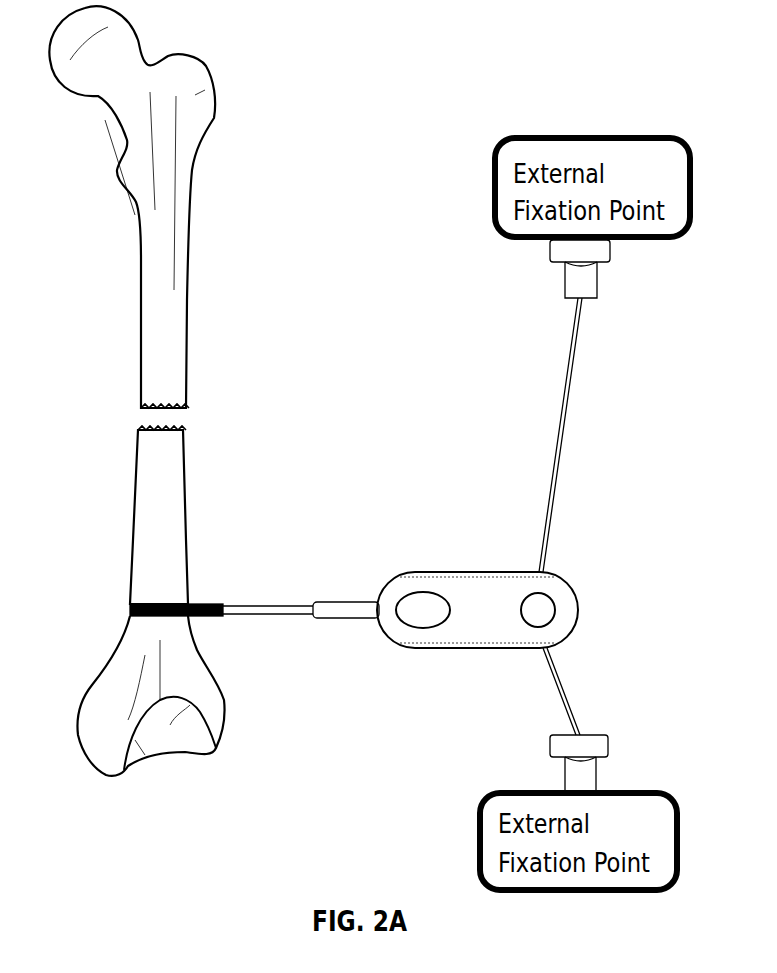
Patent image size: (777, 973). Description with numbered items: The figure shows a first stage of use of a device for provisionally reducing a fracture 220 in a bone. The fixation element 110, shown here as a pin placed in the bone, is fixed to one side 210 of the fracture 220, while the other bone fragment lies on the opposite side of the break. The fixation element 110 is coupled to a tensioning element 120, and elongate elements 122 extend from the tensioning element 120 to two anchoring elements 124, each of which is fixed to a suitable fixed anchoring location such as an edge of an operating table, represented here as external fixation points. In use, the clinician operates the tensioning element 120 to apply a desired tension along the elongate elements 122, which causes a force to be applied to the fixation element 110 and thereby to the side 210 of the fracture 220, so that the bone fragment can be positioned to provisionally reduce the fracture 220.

The fixation element 110 is at (131, 610).
The tensioning element 120 is at (456, 572).
The elongate element 122 is at (565, 415).
The anchoring element 124 is at (585, 290).
The side of the fracture 210 is at (148, 522).
The fracture 220 is at (143, 412).